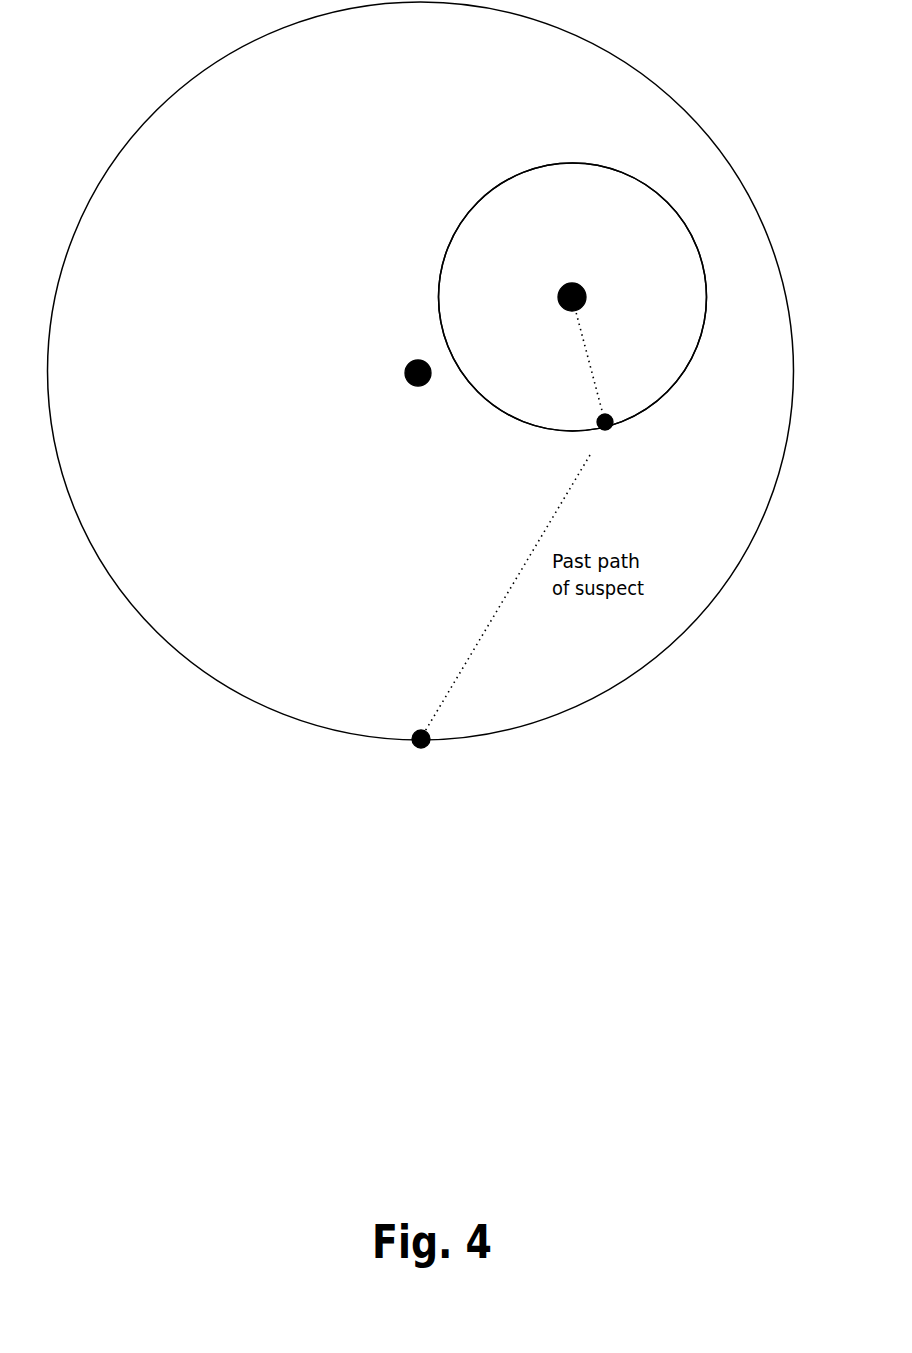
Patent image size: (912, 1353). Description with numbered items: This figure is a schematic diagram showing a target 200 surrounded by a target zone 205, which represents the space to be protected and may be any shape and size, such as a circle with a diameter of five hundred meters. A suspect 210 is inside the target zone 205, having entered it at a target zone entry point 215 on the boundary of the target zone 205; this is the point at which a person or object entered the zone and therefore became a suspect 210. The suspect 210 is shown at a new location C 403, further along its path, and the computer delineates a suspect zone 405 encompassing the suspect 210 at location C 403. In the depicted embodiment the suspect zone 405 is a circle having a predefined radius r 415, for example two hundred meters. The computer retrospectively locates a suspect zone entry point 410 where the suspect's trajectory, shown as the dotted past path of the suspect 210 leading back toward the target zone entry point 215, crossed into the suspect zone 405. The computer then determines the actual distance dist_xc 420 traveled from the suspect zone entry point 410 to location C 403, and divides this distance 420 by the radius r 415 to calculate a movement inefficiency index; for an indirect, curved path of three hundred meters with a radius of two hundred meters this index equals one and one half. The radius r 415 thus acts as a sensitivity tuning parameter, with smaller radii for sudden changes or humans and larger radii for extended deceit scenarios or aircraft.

The target 200 is at (407, 383).
The target zone 205 is at (675, 637).
The suspect 210 is at (492, 272).
The target zone entry point 215 is at (413, 745).
The location C 403 is at (578, 283).
The suspect zone 405 is at (508, 417).
The suspect zone entry point 410 is at (610, 427).
The radius r 415 is at (587, 382).
The distance dist_xc 420 is at (650, 305).